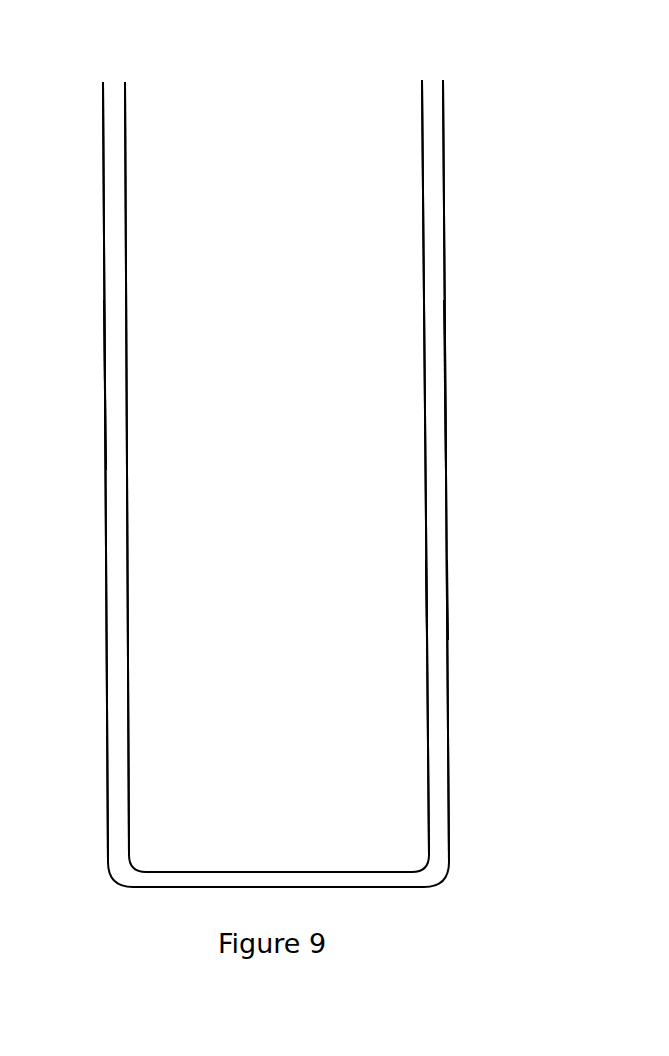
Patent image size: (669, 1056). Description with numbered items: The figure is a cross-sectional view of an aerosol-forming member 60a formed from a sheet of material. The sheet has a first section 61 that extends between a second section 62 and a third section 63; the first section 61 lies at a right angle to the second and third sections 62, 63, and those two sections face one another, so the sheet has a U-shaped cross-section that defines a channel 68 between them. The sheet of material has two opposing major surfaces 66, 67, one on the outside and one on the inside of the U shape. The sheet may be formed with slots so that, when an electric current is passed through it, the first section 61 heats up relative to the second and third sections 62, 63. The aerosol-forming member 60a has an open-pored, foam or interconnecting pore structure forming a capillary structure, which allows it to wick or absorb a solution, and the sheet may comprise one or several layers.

The aerosol-forming member 60a is at (492, 80).
The first section 61 is at (198, 878).
The second section 62 is at (108, 277).
The third section 63 is at (436, 205).
The major surface 66 is at (422, 275).
The major surface 67 is at (448, 313).
The channel 68 is at (388, 610).